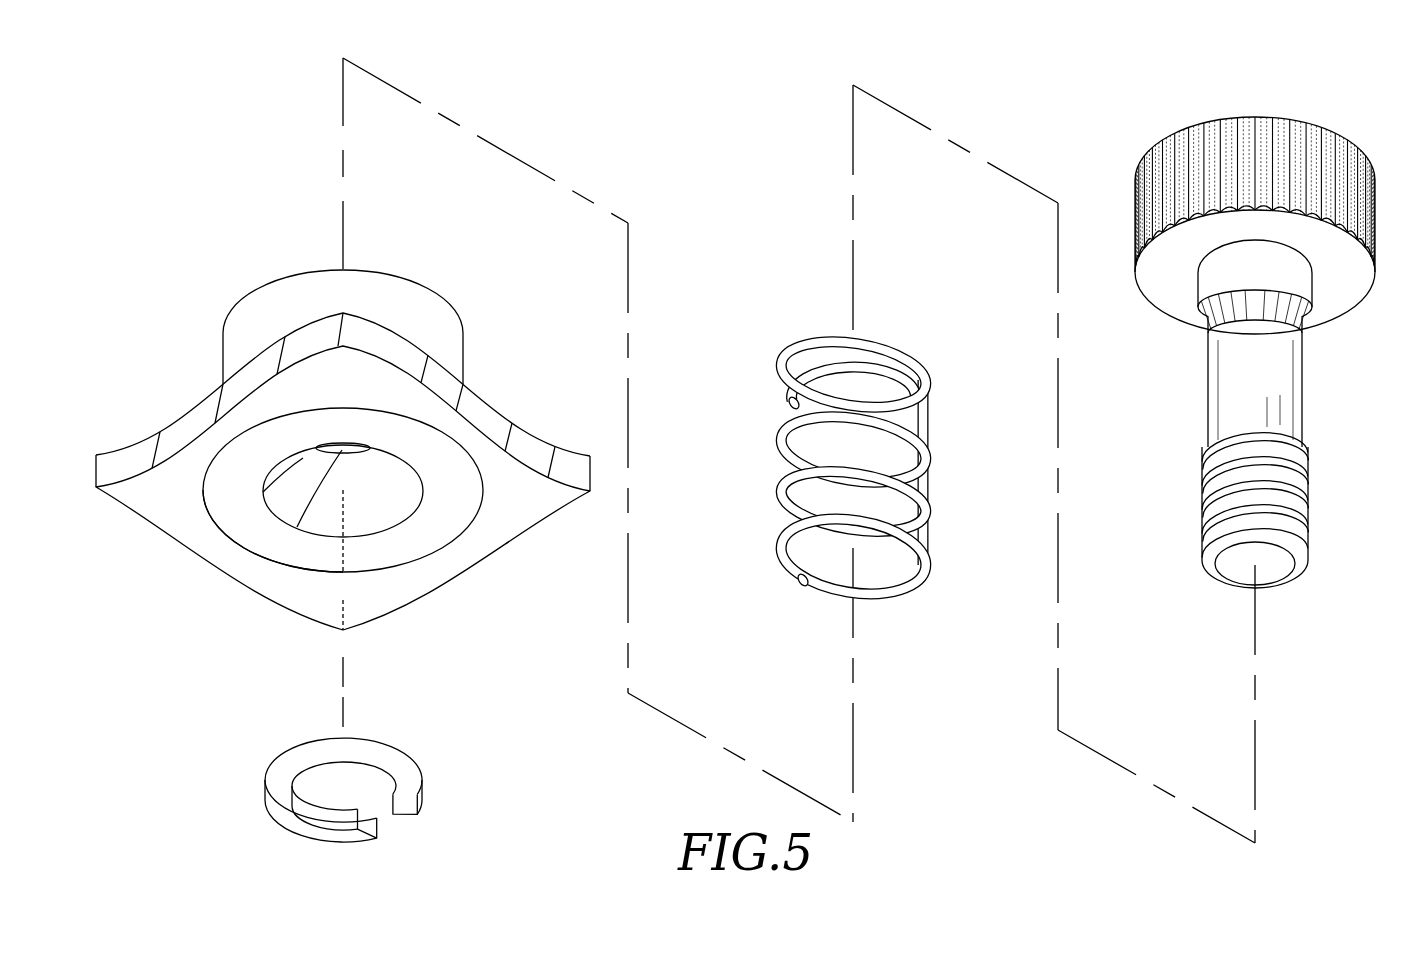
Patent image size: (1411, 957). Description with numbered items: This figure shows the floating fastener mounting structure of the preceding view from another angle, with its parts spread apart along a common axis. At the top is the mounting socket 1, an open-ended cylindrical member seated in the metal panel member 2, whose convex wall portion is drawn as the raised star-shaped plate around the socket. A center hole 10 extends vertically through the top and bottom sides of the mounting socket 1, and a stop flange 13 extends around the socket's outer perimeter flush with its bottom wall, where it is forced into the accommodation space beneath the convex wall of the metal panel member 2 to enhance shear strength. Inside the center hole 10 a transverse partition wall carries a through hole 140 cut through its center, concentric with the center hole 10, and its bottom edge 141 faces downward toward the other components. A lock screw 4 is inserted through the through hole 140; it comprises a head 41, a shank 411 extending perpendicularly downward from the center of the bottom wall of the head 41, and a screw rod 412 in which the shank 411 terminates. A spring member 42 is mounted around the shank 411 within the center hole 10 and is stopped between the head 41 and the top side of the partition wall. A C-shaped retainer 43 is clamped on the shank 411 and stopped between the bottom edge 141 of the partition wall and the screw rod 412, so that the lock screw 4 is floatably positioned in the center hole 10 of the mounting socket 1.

The mounting socket 1 is at (447, 335).
The metal panel member 2 is at (527, 497).
The center hole 10 is at (378, 511).
The stop flange 13 is at (305, 557).
The through hole 140 is at (221, 562).
The bottom edge 141 is at (302, 460).
The lock screw 4 is at (1162, 152).
The head 41 is at (1147, 218).
The shank 411 is at (1228, 390).
The screw rod 412 is at (1216, 505).
The spring member 42 is at (918, 462).
The C-shaped retainer 43 is at (392, 770).